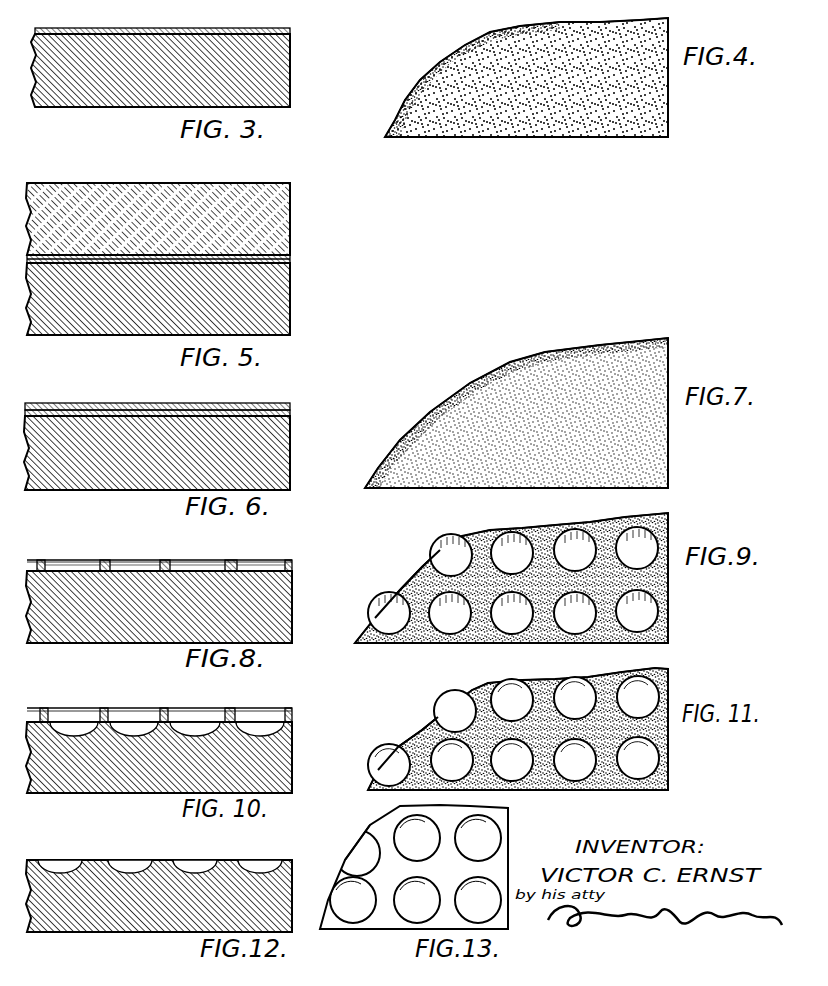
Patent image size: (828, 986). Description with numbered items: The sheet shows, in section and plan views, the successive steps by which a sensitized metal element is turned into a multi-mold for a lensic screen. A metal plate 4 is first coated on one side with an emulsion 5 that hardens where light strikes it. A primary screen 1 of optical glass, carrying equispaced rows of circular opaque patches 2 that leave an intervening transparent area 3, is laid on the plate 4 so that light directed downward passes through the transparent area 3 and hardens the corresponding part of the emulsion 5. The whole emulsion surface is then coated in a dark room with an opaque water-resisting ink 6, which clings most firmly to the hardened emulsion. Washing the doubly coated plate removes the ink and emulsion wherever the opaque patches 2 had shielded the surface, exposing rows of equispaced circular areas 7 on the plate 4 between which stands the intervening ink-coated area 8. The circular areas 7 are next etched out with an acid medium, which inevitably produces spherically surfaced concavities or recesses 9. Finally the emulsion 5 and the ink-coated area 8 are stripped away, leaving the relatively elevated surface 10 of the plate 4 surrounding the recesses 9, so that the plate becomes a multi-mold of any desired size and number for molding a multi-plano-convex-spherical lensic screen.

In FIG. 5, the primary screen 1 is at (280, 215).
In FIG. 5, the opaque patches 2 is at (266, 255).
In FIG. 5, the transparent area 3 is at (165, 255).
In FIG. 3, the metal plate 4 is at (290, 76).
In FIG. 4, the metal plate 4 is at (621, 138).
In FIG. 5, the metal plate 4 is at (278, 306).
In FIG. 6, the metal plate 4 is at (280, 449).
In FIG. 7, the metal plate 4 is at (385, 490).
In FIG. 8, the metal plate 4 is at (290, 602).
In FIG. 9, the metal plate 4 is at (418, 645).
In FIG. 10, the metal plate 4 is at (282, 757).
In FIG. 11, the metal plate 4 is at (590, 791).
In FIG. 12, the metal plate 4 is at (292, 888).
In FIG. 13, the metal plate 4 is at (497, 869).
In FIG. 3, the emulsion 5 is at (203, 29).
In FIG. 4, the emulsion 5 is at (571, 128).
In FIG. 5, the emulsion 5 is at (290, 261).
In FIG. 6, the emulsion 5 is at (292, 412).
In FIG. 8, the emulsion 5 is at (294, 567).
In FIG. 10, the emulsion 5 is at (293, 714).
In FIG. 6, the opaque water-resisting ink 6 is at (252, 404).
In FIG. 7, the opaque water-resisting ink 6 is at (488, 382).
In FIG. 8, the opaque water-resisting ink 6 is at (228, 562).
In FIG. 9, the opaque water-resisting ink 6 is at (548, 530).
In FIG. 10, the opaque water-resisting ink 6 is at (100, 710).
In FIG. 11, the opaque water-resisting ink 6 is at (482, 688).
In FIG. 8, the circular areas 7 is at (68, 570).
In FIG. 9, the circular areas 7 is at (450, 550).
In FIG. 8, the ink-coated area 8 is at (107, 562).
In FIG. 9, the ink-coated area 8 is at (422, 566).
In FIG. 10, the ink-coated area 8 is at (292, 709).
In FIG. 11, the ink-coated area 8 is at (426, 722).
In FIG. 10, the recesses 9 is at (66, 730).
In FIG. 11, the recesses 9 is at (570, 690).
In FIG. 12, the recesses 9 is at (68, 862).
In FIG. 13, the recesses 9 is at (492, 836).
In FIG. 12, the elevated surface 10 is at (105, 860).
In FIG. 13, the elevated surface 10 is at (385, 836).